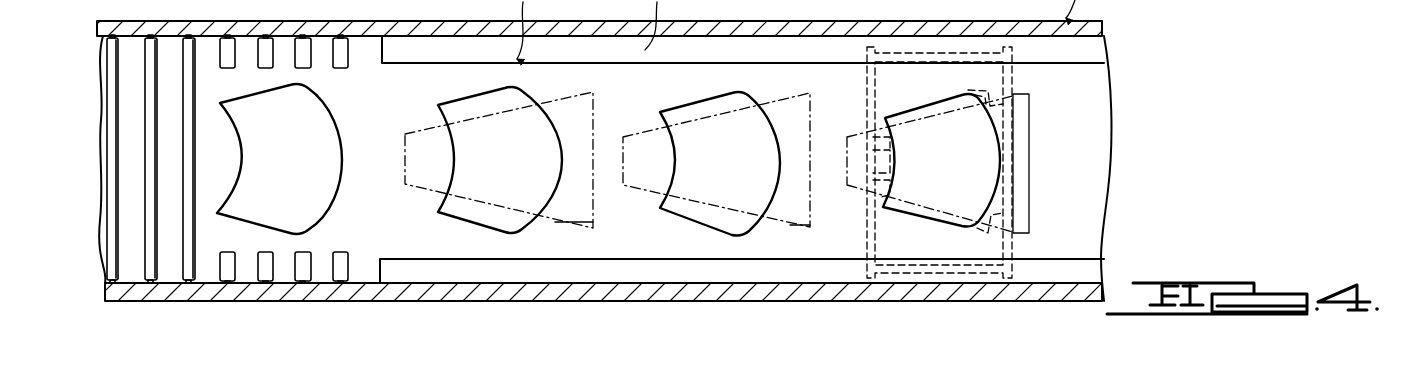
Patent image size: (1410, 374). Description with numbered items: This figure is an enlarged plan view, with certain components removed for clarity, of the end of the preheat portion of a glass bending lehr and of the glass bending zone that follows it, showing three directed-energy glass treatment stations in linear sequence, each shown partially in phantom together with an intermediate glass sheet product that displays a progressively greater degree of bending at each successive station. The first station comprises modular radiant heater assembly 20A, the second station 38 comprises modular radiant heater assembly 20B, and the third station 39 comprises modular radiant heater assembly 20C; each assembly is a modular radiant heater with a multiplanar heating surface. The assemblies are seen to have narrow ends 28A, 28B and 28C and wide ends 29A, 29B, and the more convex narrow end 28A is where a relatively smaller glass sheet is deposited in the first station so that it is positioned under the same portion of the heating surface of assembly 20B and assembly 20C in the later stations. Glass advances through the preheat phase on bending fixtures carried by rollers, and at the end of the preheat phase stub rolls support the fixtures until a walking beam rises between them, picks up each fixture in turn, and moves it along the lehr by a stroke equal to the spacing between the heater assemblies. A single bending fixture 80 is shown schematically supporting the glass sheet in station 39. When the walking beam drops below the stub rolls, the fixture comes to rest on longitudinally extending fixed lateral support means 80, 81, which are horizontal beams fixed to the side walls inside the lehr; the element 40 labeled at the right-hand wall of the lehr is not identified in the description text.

The modular radiant heater assembly 20A is at (418, 160).
The modular radiant heater assembly 20B is at (627, 159).
The modular radiant heater assembly 20C is at (1024, 150).
The narrow end 28A is at (410, 185).
The narrow end 28B is at (637, 187).
The narrow end 28C is at (853, 180).
The wide end 29A is at (562, 222).
The wide end 29B is at (793, 225).
The fixed lateral support means 81 is at (708, 272).
The bending fixture 80 is at (1013, 78).
The glass treatment station 39 is at (980, 62).
The glass treatment station 38 is at (747, 62).
The housing 40 is at (1083, 180).